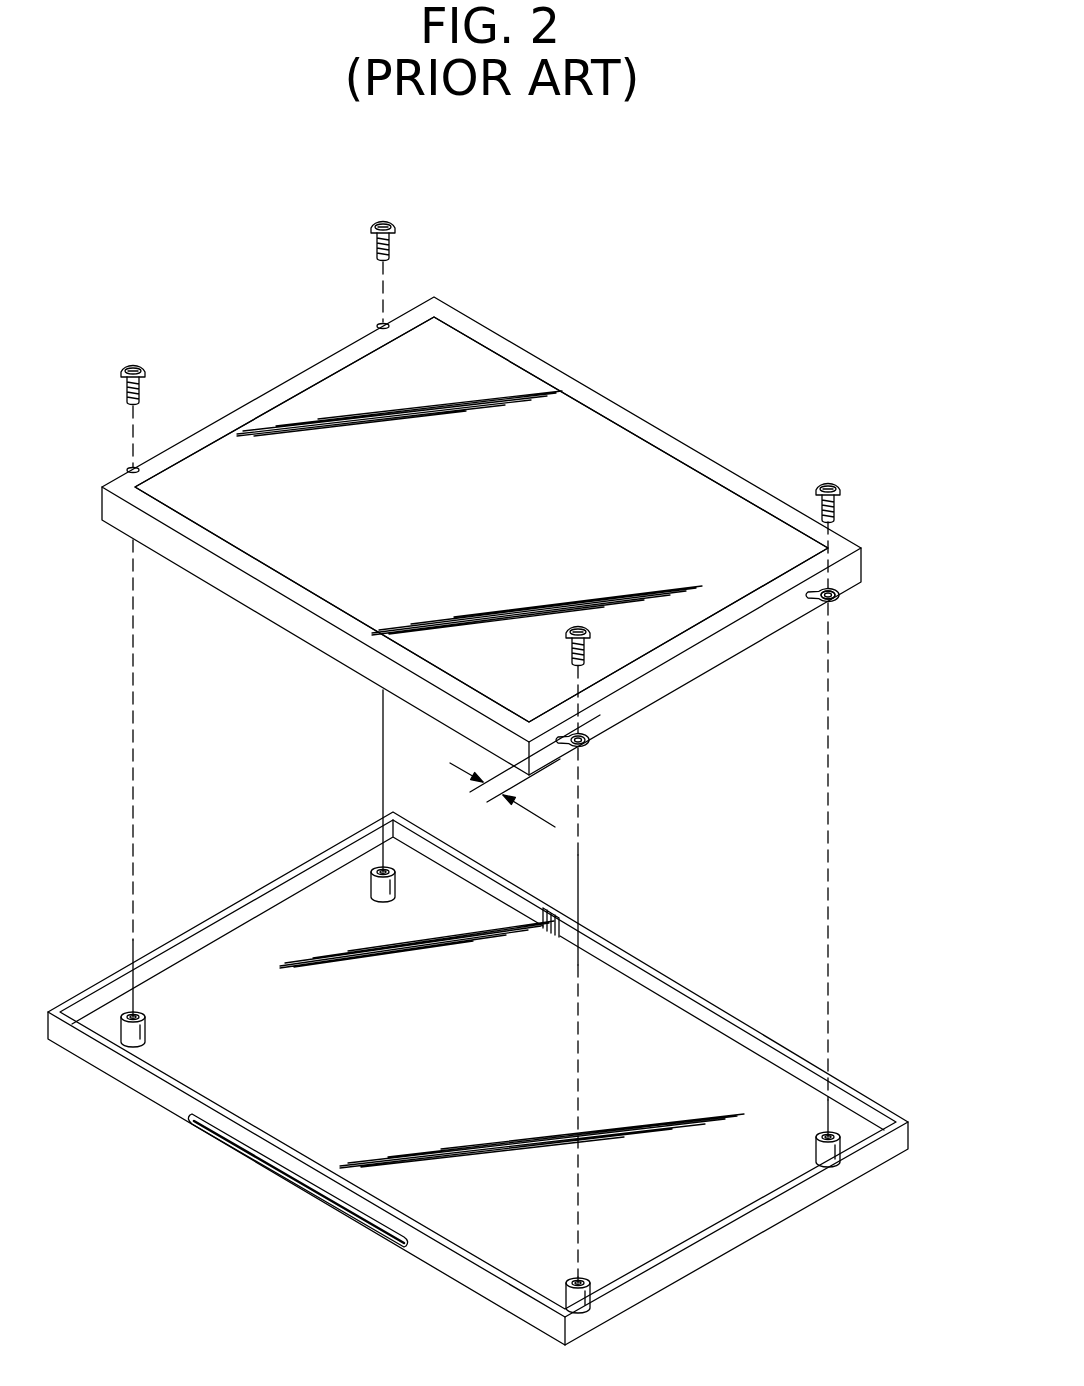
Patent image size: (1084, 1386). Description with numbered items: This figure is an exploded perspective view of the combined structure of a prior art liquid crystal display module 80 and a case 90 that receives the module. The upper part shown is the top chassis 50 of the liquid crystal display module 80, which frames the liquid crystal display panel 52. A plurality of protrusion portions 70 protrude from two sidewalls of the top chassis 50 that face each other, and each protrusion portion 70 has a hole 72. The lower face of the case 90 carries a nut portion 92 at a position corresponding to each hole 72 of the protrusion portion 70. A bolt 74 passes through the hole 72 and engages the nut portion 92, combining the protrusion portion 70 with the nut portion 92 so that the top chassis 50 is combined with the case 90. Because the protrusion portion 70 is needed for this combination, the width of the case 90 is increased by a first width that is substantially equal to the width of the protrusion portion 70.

The top chassis 50 is at (717, 473).
The liquid crystal display panel 52 is at (472, 350).
The protrusion portion 70 is at (848, 598).
The hole 72 is at (838, 587).
The bolt 74 is at (831, 487).
The liquid crystal display module 80 is at (713, 383).
The case 90 is at (603, 1312).
The nut portion 92 is at (842, 1140).